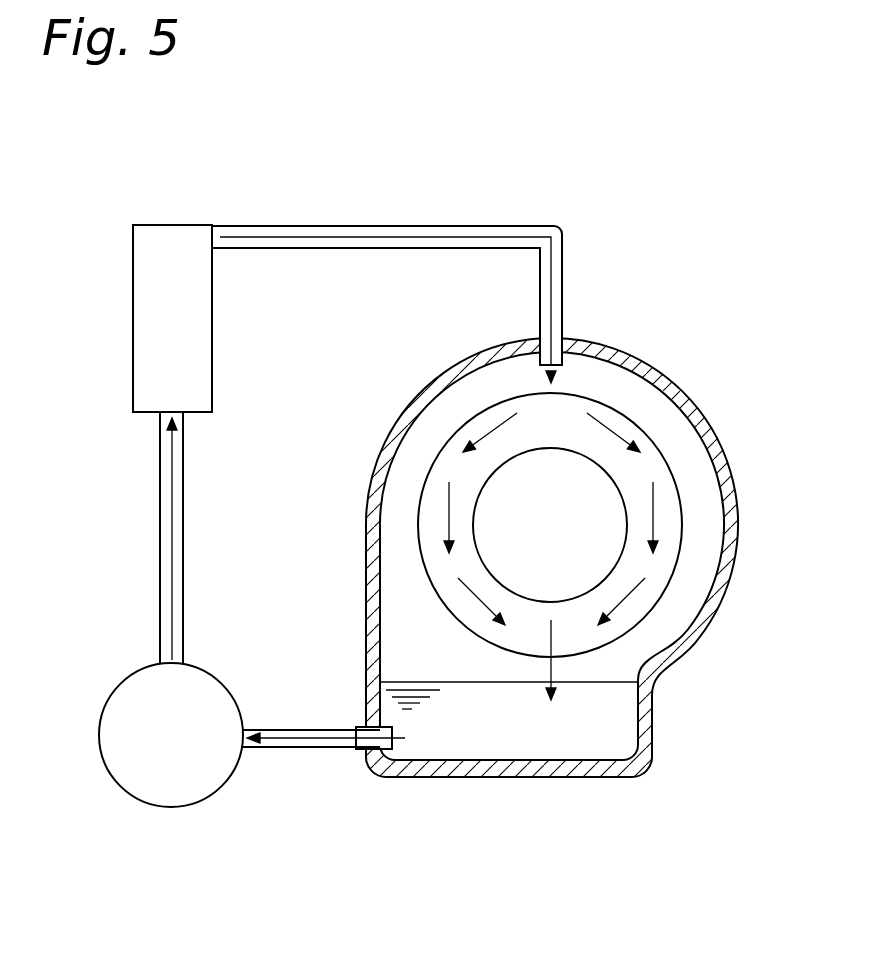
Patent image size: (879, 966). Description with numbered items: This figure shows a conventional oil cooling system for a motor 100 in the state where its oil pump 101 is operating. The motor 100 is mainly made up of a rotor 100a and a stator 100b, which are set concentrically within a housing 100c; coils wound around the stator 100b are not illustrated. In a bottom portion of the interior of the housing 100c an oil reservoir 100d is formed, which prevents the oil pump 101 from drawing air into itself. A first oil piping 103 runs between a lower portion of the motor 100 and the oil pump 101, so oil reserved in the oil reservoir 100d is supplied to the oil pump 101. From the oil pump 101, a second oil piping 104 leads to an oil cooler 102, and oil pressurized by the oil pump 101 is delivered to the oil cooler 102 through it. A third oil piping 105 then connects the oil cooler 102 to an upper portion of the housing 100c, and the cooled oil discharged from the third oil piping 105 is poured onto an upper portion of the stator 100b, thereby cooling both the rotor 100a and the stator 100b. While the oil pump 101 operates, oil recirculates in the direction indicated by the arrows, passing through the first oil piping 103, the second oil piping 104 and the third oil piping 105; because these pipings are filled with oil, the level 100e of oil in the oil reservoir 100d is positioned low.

The motor 100 is at (541, 572).
The rotor 100a is at (595, 492).
The stator 100b is at (658, 573).
The housing 100c is at (418, 392).
The oil reservoir 100d is at (529, 756).
The level of oil 100e is at (410, 682).
The oil pump 101 is at (115, 742).
The oil cooler 102 is at (145, 322).
The first oil piping 103 is at (307, 750).
The second oil piping 104 is at (160, 540).
The third oil piping 105 is at (400, 226).